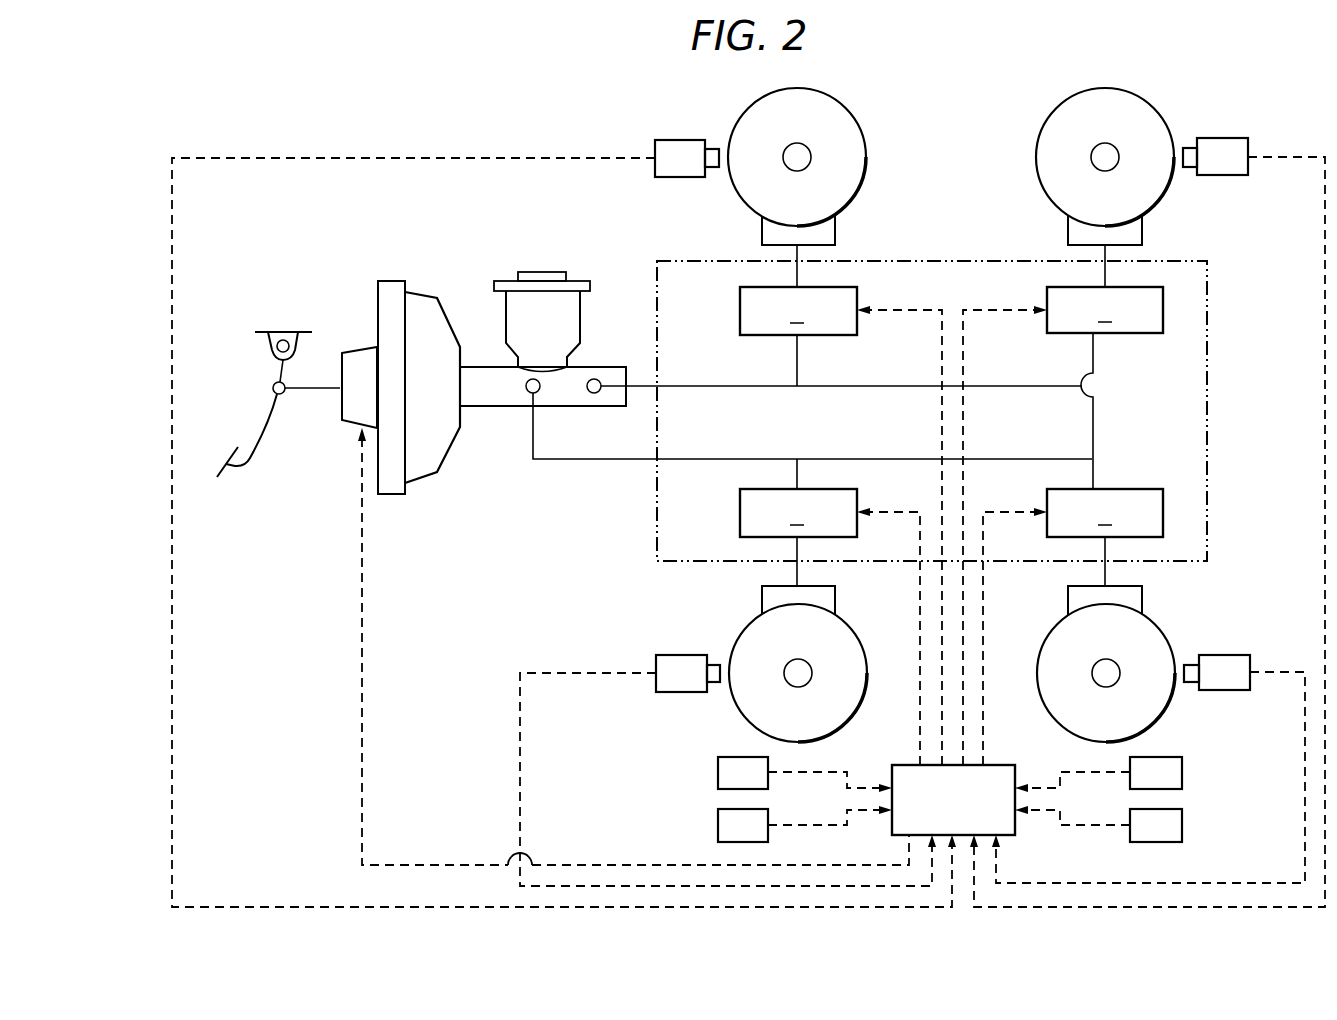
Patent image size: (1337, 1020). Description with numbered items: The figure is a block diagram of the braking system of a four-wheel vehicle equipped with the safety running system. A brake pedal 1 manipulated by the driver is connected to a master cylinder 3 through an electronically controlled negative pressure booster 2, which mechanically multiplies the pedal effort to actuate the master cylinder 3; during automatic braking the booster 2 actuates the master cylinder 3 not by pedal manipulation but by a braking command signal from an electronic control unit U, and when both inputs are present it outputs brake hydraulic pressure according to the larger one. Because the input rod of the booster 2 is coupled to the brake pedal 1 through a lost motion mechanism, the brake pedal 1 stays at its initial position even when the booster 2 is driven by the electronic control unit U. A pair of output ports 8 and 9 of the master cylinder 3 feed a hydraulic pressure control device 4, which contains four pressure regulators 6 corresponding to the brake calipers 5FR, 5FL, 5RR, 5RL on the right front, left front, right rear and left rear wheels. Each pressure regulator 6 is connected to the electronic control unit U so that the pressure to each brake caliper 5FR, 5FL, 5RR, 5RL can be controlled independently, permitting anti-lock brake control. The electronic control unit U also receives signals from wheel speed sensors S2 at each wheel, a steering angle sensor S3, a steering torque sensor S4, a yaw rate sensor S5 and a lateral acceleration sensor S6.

The brake pedal 1 is at (233, 449).
The electronically controlled negative pressure booster 2 is at (422, 292).
The master cylinder 3 is at (606, 367).
The hydraulic pressure control device 4 is at (1207, 365).
The brake caliper 5FR is at (835, 232).
The brake caliper 5RR is at (1068, 232).
The brake caliper 5FL is at (835, 599).
The brake caliper 5RL is at (1068, 598).
The pressure regulator 6 is at (951, 412).
The output port 8 is at (595, 394).
The output port 9 is at (527, 392).
The wheel speed sensor S2 is at (952, 394).
The steering angle sensor S3 is at (716, 772).
The steering torque sensor S4 is at (716, 825).
The yaw rate sensor S5 is at (1182, 772).
The lateral acceleration sensor S6 is at (1182, 825).
The electronic control unit U is at (945, 812).